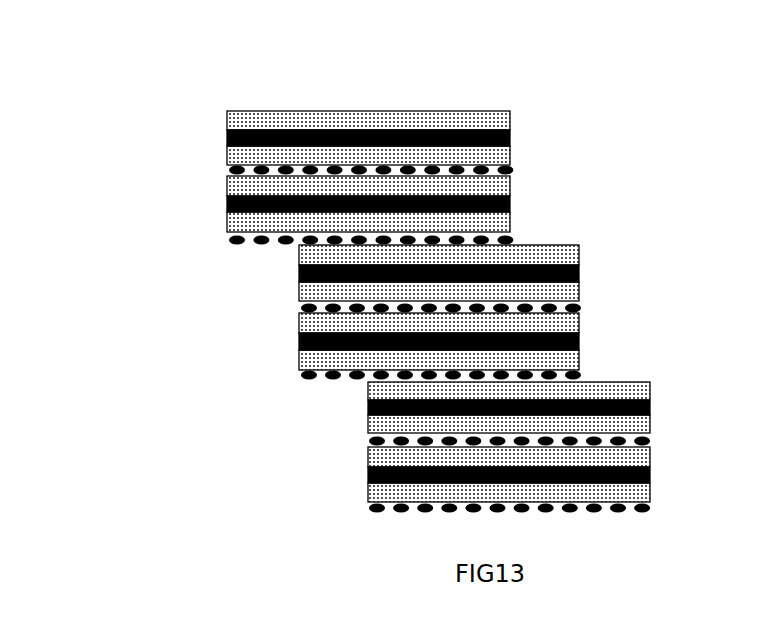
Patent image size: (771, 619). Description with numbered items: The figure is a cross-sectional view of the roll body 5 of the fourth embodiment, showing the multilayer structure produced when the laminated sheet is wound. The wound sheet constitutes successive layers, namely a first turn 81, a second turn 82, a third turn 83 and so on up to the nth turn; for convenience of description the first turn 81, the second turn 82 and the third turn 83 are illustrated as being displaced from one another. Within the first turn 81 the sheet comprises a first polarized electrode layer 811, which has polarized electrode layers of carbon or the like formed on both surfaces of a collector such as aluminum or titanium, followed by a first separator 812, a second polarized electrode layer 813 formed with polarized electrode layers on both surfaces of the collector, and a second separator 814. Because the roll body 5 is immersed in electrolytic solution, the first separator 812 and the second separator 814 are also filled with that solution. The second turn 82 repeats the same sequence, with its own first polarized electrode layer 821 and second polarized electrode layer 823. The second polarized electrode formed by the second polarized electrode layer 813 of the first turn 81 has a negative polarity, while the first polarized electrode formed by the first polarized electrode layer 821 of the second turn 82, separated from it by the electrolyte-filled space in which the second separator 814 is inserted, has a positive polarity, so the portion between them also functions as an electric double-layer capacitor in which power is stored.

The roll body 5 is at (391, 103).
The first turn 81 is at (510, 112).
The second turn 82 is at (579, 246).
The third turn 83 is at (650, 382).
The first polarized electrode layer 811 is at (213, 113).
The first separator 812 is at (230, 171).
The second polarized electrode layer 813 is at (213, 177).
The second separator 814 is at (230, 241).
The first polarized electrode layer 821 is at (289, 248).
The second polarized electrode layer 823 is at (289, 313).